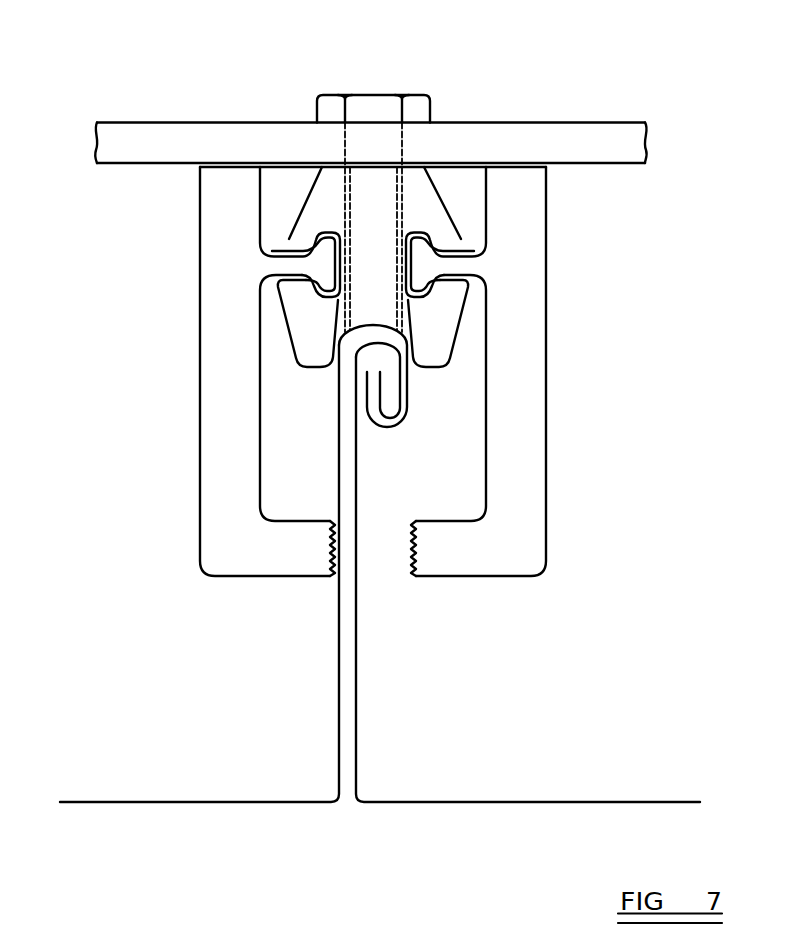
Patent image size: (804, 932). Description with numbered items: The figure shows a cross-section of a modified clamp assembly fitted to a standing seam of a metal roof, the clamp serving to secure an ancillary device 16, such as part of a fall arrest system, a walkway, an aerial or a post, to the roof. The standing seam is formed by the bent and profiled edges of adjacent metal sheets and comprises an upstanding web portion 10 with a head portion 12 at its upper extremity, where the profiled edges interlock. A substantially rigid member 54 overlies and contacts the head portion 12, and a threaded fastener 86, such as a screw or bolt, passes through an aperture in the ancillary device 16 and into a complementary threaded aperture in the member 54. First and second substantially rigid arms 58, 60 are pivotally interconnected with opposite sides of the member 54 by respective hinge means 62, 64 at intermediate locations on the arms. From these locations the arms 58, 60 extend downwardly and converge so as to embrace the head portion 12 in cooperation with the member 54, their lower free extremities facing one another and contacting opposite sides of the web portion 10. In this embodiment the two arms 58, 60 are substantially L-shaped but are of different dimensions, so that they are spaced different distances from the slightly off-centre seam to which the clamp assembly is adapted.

The upstanding web portion 10 is at (357, 643).
The head portion 12 is at (410, 397).
The ancillary device 16 is at (563, 123).
The substantially rigid member 54 is at (445, 205).
The first substantially rigid arm 58 is at (200, 405).
The second substantially rigid arm 60 is at (547, 395).
The hinge means 62 is at (297, 245).
The hinge means 64 is at (453, 250).
The threaded fastener 86 is at (377, 100).